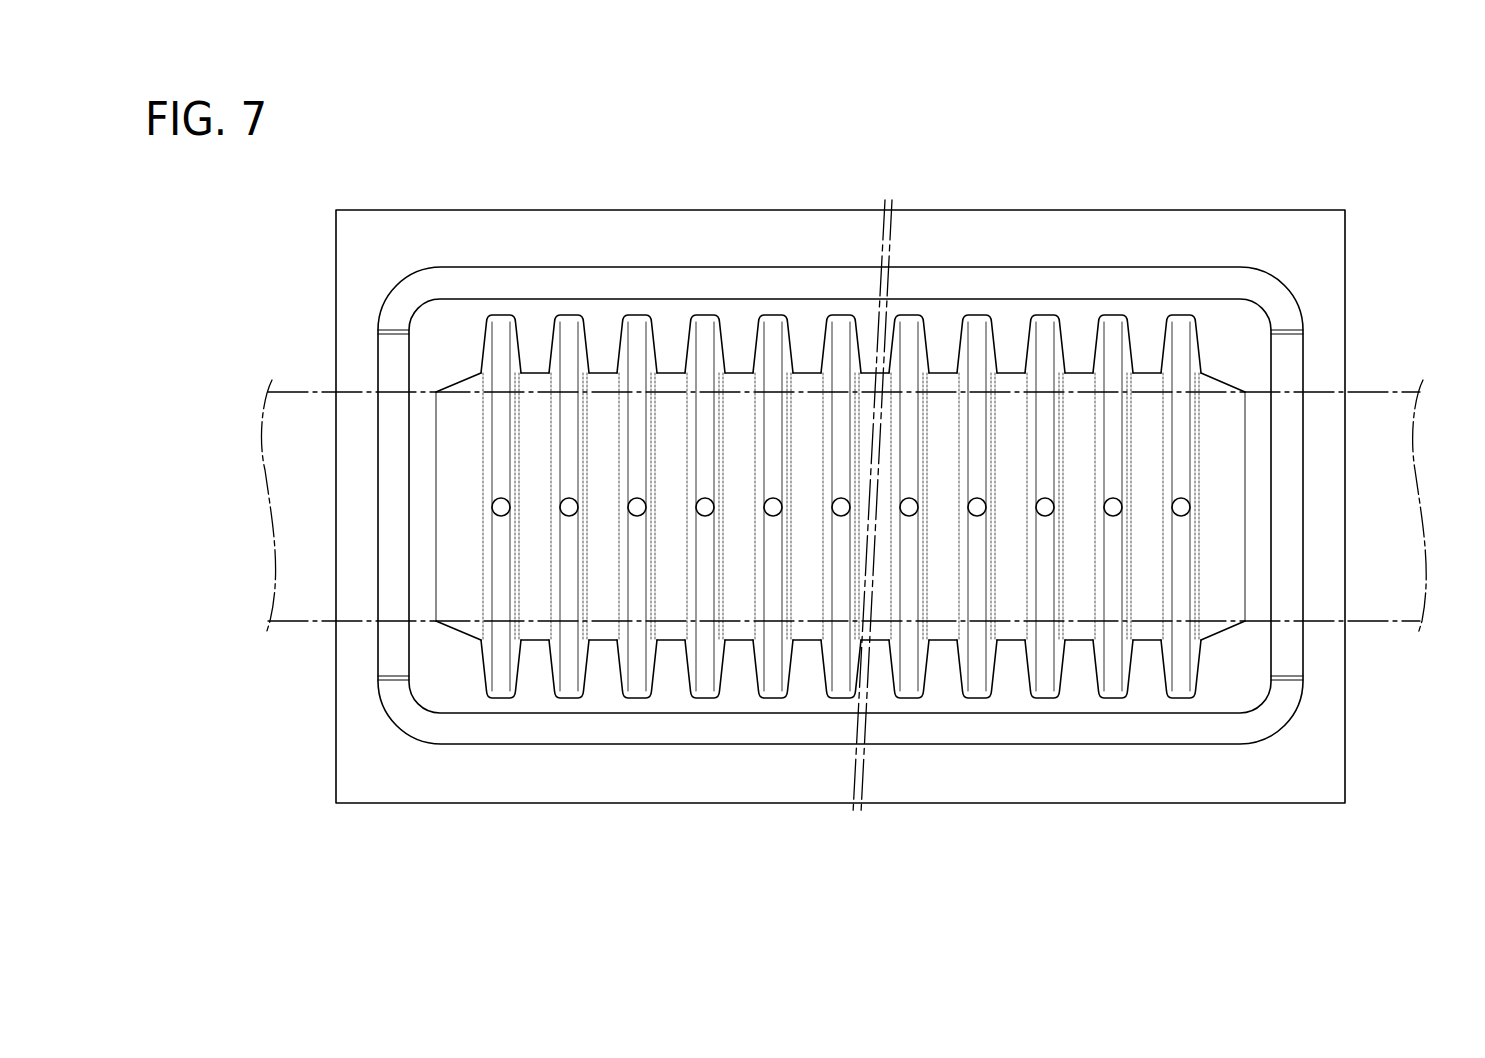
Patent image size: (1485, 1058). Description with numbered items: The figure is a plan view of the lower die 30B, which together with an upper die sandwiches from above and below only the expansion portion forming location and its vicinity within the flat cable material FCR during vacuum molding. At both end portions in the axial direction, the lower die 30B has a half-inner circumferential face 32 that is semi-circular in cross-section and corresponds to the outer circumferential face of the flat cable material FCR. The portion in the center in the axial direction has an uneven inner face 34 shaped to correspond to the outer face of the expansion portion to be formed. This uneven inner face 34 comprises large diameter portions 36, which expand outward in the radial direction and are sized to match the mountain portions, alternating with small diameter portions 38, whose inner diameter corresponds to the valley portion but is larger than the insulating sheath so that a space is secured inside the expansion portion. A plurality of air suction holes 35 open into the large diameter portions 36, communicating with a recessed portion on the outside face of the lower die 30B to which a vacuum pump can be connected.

The lower die 30B is at (1187, 188).
The half-inner circumferential face 32 is at (1322, 407).
The uneven inner face 34 is at (908, 692).
The air suction holes 35 is at (1045, 498).
The large diameter portions 36 is at (841, 423).
The small diameter portions 38 is at (677, 377).
The flat cable material FCR is at (1380, 621).